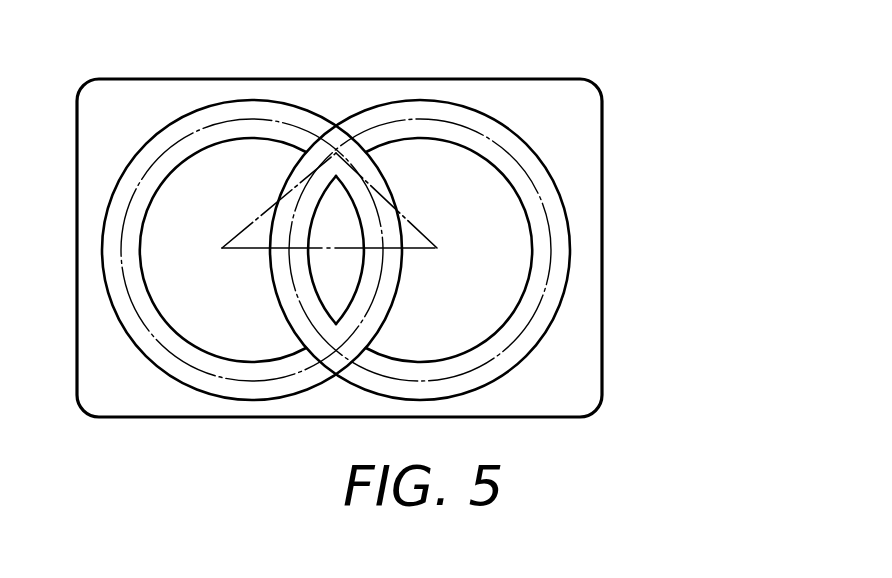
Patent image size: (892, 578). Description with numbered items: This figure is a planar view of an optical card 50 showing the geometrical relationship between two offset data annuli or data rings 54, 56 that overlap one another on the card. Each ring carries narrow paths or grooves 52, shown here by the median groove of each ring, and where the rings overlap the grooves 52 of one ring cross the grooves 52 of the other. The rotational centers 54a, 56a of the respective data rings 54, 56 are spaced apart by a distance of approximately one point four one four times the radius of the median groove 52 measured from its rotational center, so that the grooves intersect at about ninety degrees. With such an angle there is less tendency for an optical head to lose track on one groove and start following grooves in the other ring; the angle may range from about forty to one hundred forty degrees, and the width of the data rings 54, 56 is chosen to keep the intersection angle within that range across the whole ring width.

The optical card 50 is at (661, 171).
The grooves 52 is at (242, 118).
The data ring 54 is at (150, 138).
The data ring 56 is at (527, 140).
The rotational center 54a is at (222, 248).
The rotational center 56a is at (437, 248).